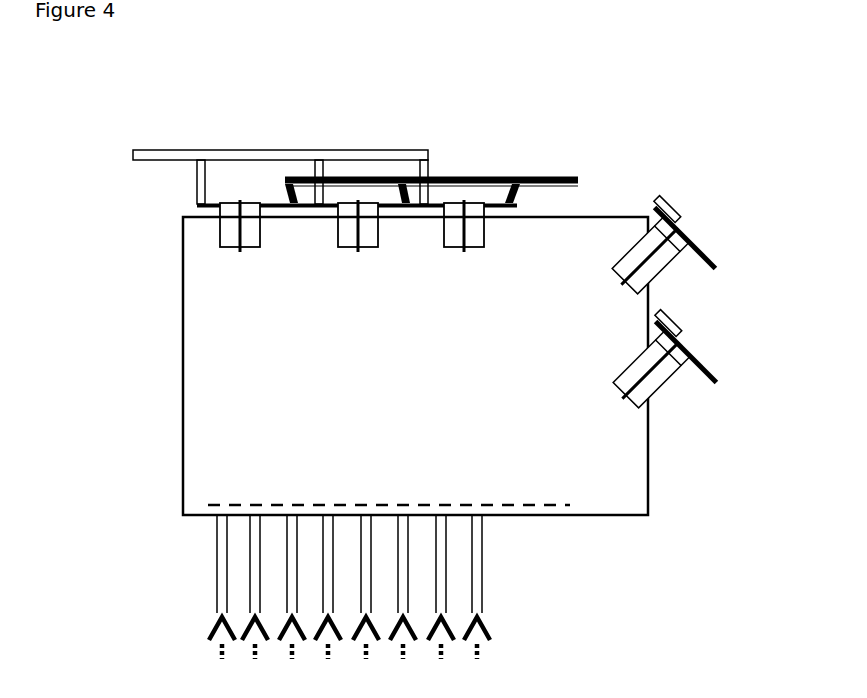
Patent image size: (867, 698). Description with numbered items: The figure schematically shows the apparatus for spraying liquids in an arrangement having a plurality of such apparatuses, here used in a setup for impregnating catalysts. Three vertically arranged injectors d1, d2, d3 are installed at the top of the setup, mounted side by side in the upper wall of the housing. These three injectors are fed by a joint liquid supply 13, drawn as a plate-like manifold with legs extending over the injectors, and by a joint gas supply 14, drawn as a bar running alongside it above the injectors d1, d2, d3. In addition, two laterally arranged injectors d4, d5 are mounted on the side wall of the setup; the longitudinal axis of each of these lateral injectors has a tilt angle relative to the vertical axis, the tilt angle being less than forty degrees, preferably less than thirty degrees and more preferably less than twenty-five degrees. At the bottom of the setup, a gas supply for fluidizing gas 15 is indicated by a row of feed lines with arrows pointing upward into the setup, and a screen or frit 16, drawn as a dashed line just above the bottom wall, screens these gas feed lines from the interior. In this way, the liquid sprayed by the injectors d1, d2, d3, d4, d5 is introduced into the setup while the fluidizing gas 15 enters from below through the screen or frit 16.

The joint liquid supply 13 is at (202, 150).
The joint gas supply 14 is at (543, 177).
The vertically arranged injector d1 is at (219, 233).
The vertically arranged injector d2 is at (337, 233).
The vertically arranged injector d3 is at (443, 234).
The laterally arranged injector d4 is at (652, 268).
The laterally arranged injector d5 is at (653, 387).
The gas supply for fluidizing gas 15 is at (220, 553).
The screen or frit 16 is at (513, 507).